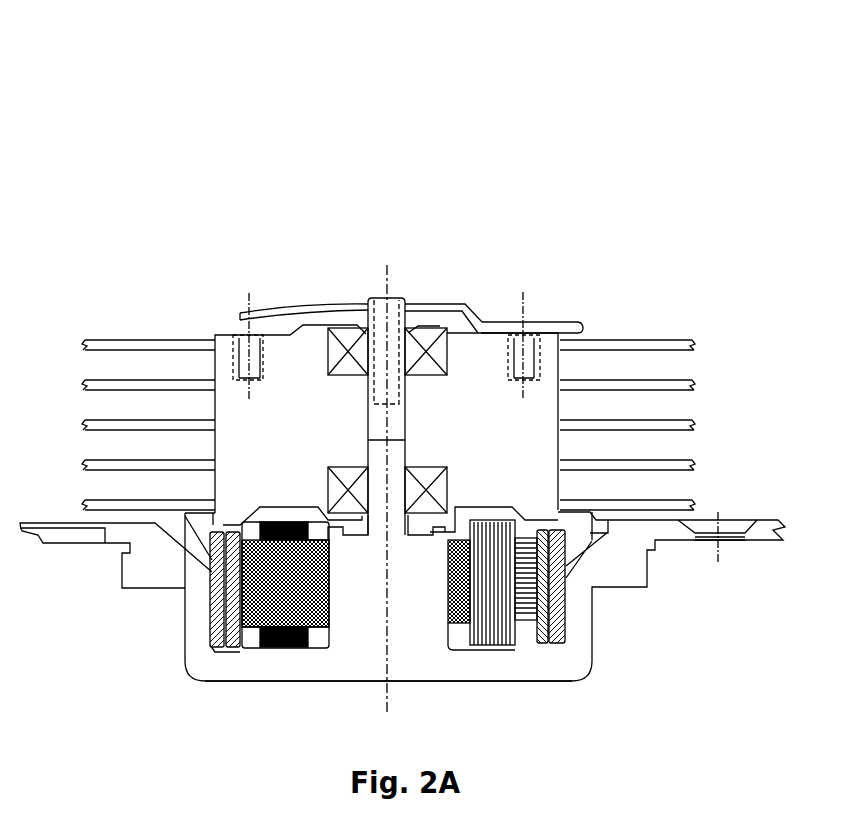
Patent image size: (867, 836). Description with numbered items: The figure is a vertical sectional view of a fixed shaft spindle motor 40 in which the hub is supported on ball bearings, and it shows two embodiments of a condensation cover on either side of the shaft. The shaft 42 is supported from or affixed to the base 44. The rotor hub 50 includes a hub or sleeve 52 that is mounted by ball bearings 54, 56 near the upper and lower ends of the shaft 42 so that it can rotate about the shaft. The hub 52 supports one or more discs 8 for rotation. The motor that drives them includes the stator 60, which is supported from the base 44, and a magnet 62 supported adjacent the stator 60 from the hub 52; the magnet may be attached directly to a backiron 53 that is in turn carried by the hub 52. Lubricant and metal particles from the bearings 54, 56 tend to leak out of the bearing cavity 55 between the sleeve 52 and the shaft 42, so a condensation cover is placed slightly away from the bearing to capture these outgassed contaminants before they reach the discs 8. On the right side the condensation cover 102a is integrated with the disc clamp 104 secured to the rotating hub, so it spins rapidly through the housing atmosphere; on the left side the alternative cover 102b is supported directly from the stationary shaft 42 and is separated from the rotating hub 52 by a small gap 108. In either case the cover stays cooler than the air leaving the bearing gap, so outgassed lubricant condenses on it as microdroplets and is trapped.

The spindle motor 40 is at (136, 80).
The discs 8 is at (100, 338).
The small gap 108 is at (240, 330).
The condensation cover 102b is at (301, 294).
The bearing cavity 55 is at (360, 308).
The condensation cover 102a is at (446, 282).
The disc clamp 104 is at (581, 321).
The stator 60 is at (330, 618).
The shaft 42 is at (401, 421).
The ball bearing 54 is at (328, 370).
The ball bearing 56 is at (328, 490).
The hub or sleeve 52 is at (280, 450).
The rotor hub 50 is at (528, 453).
The base 44 is at (385, 643).
The backiron 53 is at (213, 645).
The magnet 62 is at (240, 648).